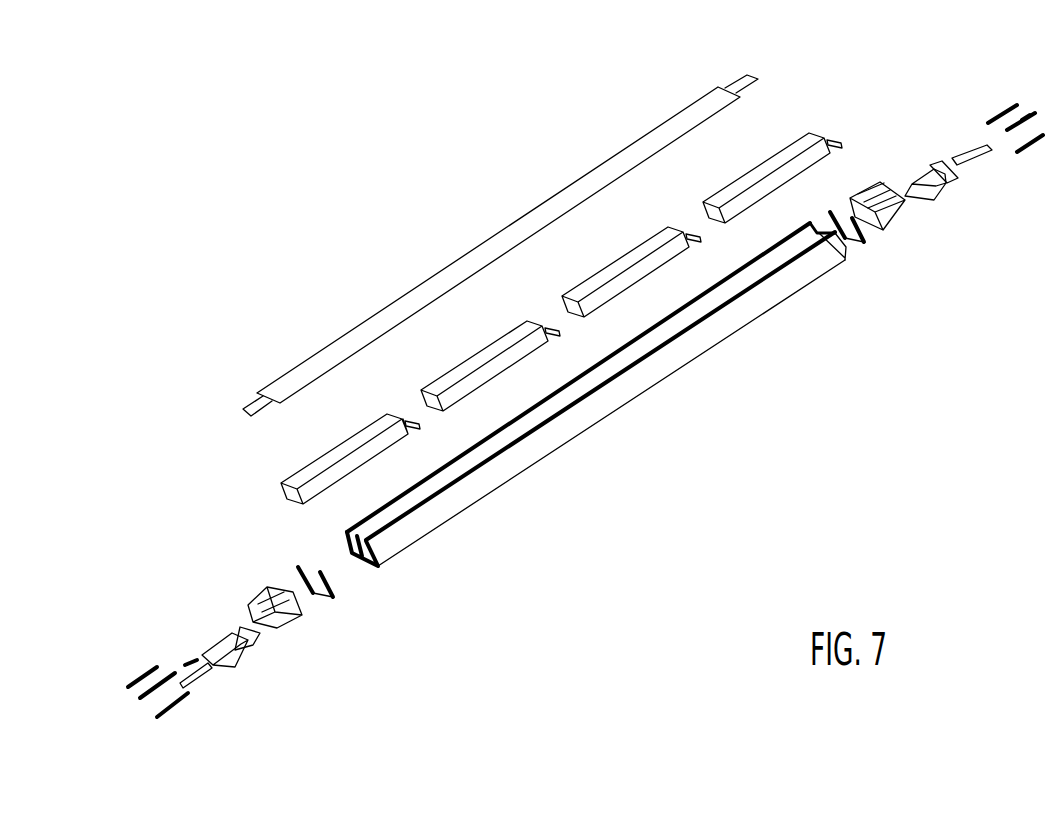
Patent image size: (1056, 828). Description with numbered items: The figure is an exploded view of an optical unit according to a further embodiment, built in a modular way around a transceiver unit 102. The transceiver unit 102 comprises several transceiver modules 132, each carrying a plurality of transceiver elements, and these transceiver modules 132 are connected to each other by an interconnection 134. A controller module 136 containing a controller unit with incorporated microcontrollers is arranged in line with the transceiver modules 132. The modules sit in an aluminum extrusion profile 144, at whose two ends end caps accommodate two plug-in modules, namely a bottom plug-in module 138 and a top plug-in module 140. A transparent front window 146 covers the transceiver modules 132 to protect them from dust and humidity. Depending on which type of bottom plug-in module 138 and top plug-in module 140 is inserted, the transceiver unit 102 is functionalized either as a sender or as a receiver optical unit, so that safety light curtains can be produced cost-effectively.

The transceiver unit 102 is at (596, 403).
The transceiver module 132 is at (632, 287).
The interconnection 134 is at (418, 432).
The controller module 136 is at (318, 462).
The bottom plug-in module 138 is at (217, 640).
The top plug-in module 140 is at (920, 172).
The aluminum extrusion profile 144 is at (458, 517).
The transparent front window 146 is at (393, 299).